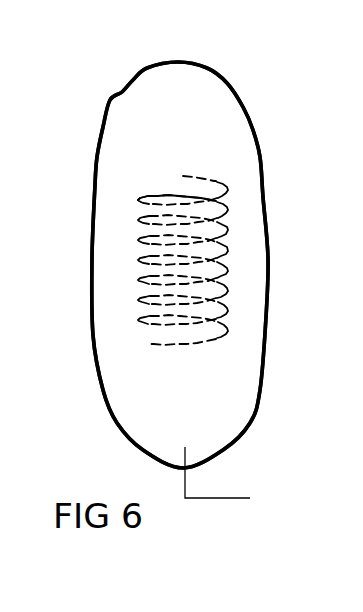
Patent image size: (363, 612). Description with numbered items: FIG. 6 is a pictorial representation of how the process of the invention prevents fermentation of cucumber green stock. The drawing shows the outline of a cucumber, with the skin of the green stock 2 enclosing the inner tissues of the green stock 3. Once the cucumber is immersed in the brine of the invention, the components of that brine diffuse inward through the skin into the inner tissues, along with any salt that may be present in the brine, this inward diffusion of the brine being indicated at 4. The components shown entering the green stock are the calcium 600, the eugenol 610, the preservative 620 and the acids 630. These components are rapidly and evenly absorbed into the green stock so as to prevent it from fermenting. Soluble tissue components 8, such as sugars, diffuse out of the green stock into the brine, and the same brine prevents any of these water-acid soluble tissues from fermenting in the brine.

The skin of the green stock 2 is at (229, 84).
The inner tissues of the green stock 3 is at (167, 95).
The sodium chloride brine diffusing into the green stock 4 is at (178, 260).
The soluble tissue components 8 is at (249, 493).
The calcium 600 is at (129, 185).
The eugenol 610 is at (128, 258).
The preservative 620 is at (129, 335).
The acids 630 is at (240, 317).